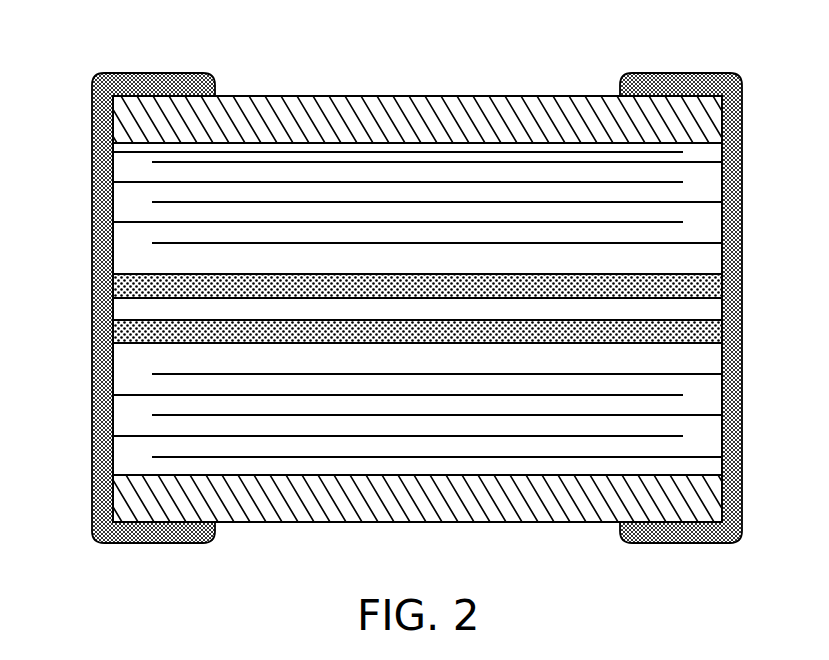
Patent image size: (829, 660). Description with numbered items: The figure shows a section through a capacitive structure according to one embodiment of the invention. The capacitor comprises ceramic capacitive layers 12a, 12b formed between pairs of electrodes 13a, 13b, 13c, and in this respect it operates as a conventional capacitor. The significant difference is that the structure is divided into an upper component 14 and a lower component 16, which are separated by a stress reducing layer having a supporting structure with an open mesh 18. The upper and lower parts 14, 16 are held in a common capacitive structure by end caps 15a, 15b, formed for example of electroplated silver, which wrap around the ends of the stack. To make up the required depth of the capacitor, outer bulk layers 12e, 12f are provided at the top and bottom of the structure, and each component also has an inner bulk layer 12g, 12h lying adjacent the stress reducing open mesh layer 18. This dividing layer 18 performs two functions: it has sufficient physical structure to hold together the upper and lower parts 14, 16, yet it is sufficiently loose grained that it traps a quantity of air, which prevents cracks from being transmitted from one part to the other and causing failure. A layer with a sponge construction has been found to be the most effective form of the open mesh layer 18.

The upper component 14 is at (539, 78).
The lower component 16 is at (547, 538).
The ceramic capacitive layer 12a is at (705, 152).
The ceramic capacitive layer 12b is at (667, 173).
The outer bulk layer 12e is at (362, 107).
The outer bulk layer 12f is at (293, 510).
The inner bulk layer 12g is at (717, 291).
The inner bulk layer 12h is at (712, 332).
The electrode 13a is at (152, 161).
The electrode 13b is at (144, 183).
The electrode 13c is at (158, 203).
The end cap 15a is at (158, 78).
The end cap 15b is at (680, 78).
The stress reducing layer having a supporting structure with an open mesh 18 is at (712, 310).